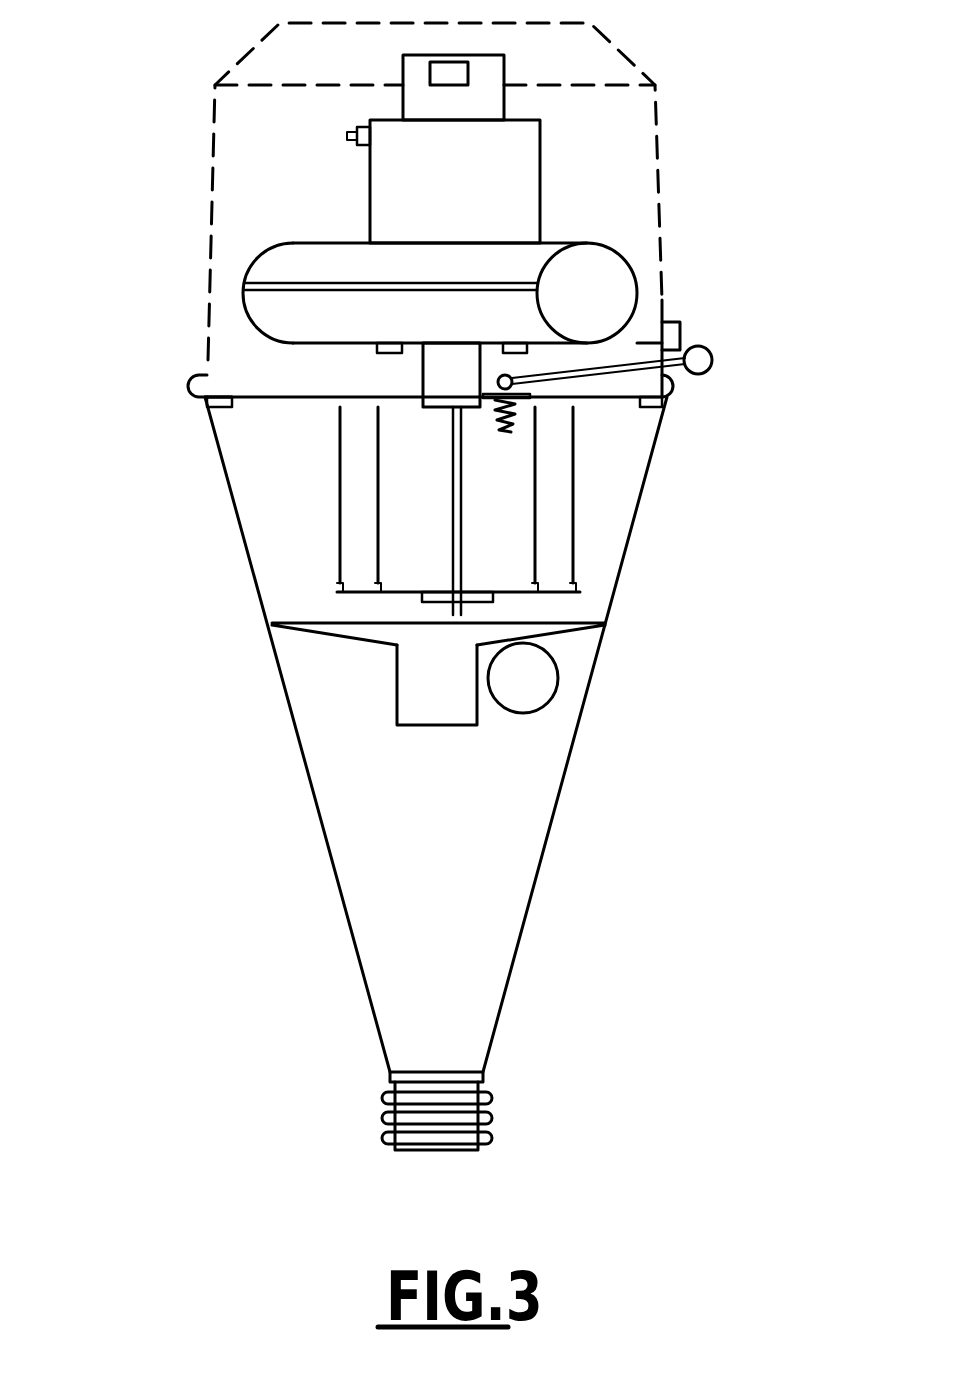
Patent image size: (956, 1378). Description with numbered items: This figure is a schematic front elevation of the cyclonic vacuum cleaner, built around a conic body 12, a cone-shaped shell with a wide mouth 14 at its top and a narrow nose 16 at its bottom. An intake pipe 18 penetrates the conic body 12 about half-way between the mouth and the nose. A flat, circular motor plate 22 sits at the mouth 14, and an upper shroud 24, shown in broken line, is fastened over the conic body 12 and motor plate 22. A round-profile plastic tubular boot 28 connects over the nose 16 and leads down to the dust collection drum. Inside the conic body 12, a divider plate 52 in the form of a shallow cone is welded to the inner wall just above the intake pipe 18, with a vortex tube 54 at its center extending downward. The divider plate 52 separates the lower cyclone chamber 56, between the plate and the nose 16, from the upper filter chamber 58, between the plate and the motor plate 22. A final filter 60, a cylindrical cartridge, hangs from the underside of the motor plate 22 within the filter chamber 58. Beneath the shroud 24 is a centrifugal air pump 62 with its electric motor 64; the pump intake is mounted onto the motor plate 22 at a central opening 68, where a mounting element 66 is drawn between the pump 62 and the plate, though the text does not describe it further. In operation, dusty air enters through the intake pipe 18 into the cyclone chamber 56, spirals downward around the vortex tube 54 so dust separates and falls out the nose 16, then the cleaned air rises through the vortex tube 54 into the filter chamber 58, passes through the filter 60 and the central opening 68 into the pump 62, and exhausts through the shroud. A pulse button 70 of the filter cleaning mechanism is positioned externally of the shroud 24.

The conic body 12 is at (237, 519).
The mouth 14 is at (192, 397).
The nose 16 is at (498, 1062).
The intake pipe 18 is at (558, 682).
The motor plate 22 is at (248, 397).
The upper shroud 24 is at (664, 185).
The tubular boot 28 is at (487, 1118).
The divider plate 52 is at (308, 623).
The vortex tube 54 is at (397, 668).
The cyclone chamber 56 is at (328, 963).
The filter chamber 58 is at (702, 403).
The final filter 60 is at (343, 495).
The centrifugal air pump 62 is at (299, 243).
The electric motor 64 is at (370, 185).
The drive housing 66 is at (450, 370).
The central opening 68 is at (417, 402).
The pulse button 70 is at (704, 347).